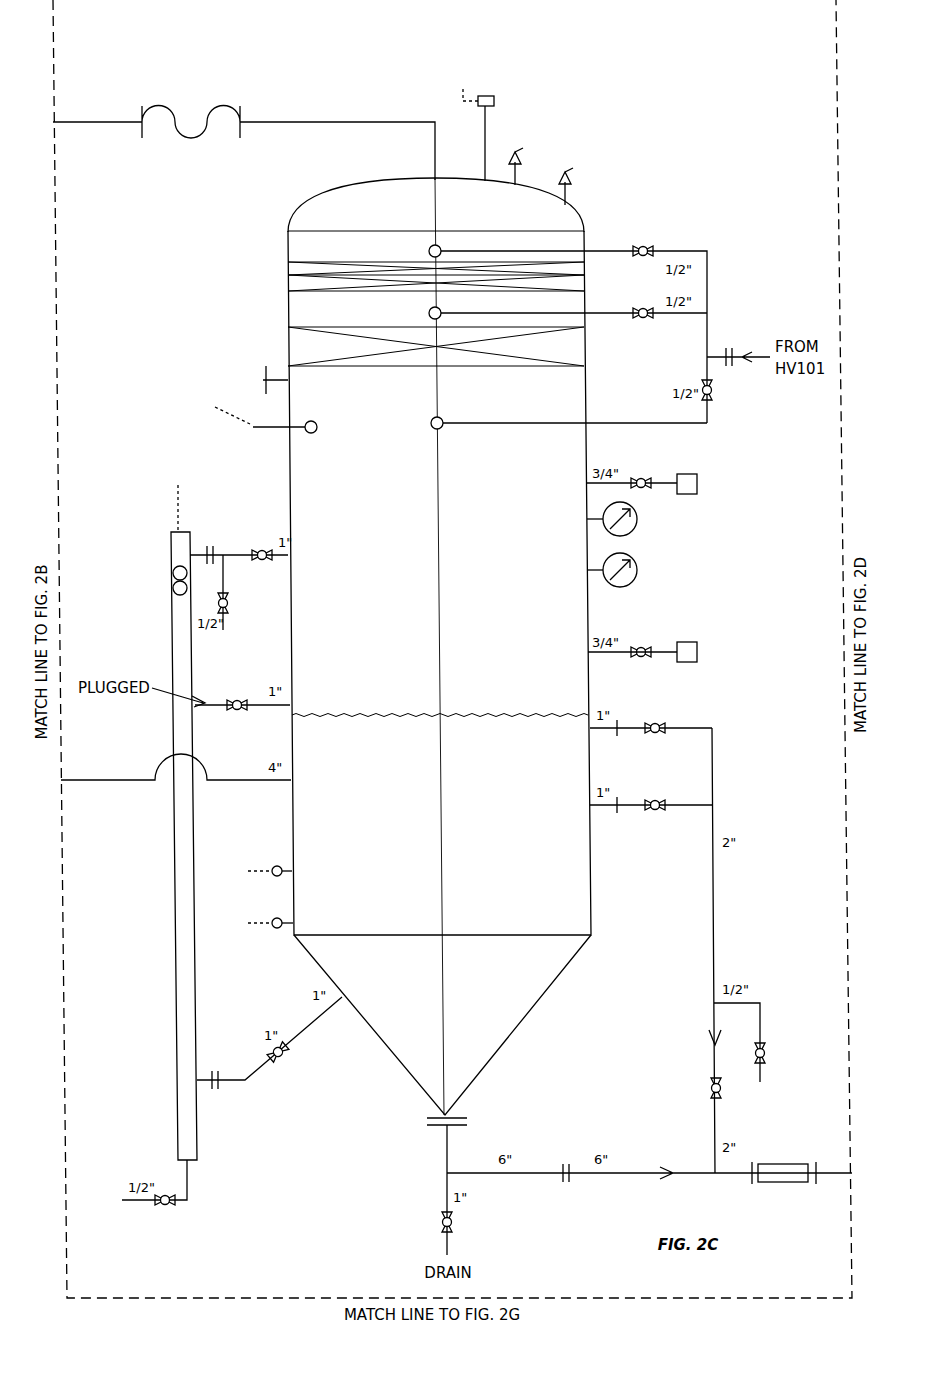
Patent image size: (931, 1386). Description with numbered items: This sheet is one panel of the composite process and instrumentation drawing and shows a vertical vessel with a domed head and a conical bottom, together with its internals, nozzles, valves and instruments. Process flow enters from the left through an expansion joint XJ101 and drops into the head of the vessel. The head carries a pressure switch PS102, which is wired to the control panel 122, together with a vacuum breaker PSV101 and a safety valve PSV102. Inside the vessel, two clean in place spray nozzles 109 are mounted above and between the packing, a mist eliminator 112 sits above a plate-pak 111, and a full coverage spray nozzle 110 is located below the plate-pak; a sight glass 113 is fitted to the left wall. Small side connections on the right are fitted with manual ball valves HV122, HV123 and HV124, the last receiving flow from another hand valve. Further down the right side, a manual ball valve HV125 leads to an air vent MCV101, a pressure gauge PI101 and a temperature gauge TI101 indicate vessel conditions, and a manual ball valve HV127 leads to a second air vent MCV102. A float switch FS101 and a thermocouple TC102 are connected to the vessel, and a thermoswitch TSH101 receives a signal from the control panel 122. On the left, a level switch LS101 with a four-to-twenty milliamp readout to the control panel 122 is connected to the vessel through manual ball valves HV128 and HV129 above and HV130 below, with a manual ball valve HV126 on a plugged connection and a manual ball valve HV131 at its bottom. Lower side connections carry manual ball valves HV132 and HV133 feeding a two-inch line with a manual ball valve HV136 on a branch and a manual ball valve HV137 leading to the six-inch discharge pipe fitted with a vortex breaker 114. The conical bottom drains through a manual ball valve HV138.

The clean in place spray nozzles 109 is at (343, 243).
The full coverage spray nozzle 110 is at (555, 400).
The plate-pak 111 is at (400, 338).
The mist eliminator 112 is at (399, 267).
The sight glass 113 is at (255, 373).
The vortex breaker 114 is at (784, 1147).
The control panel 122 is at (245, 910).
The expansion joint XJ101 is at (244, 117).
The pressure switch PS102 is at (465, 110).
The vacuum breaker PSV101 is at (525, 145).
The safety valve PSV102 is at (575, 162).
The manual ball valve HV122 is at (650, 220).
The manual ball valve HV123 is at (665, 338).
The manual ball valve HV124 is at (733, 405).
The manual ball valve HV125 is at (644, 456).
The manual ball valve HV126 is at (242, 678).
The manual ball valve HV127 is at (646, 626).
The manual ball valve HV128 is at (246, 527).
The manual ball valve HV129 is at (252, 608).
The manual ball valve HV130 is at (287, 1077).
The manual ball valve HV131 is at (173, 1229).
The manual ball valve HV132 is at (675, 702).
The manual ball valve HV133 is at (675, 781).
The manual ball valve HV136 is at (789, 1055).
The manual ball valve HV137 is at (688, 1090).
The manual ball valve HV138 is at (476, 1228).
The air vent MCV101 is at (669, 483).
The air vent MCV102 is at (670, 652).
The pressure gauge PI101 is at (639, 519).
The temperature gauge TI101 is at (639, 570).
The float switch FS101 is at (246, 429).
The level switch LS101 is at (142, 800).
The thermoswitch TSH101 is at (263, 840).
The thermocouple TC102 is at (263, 968).